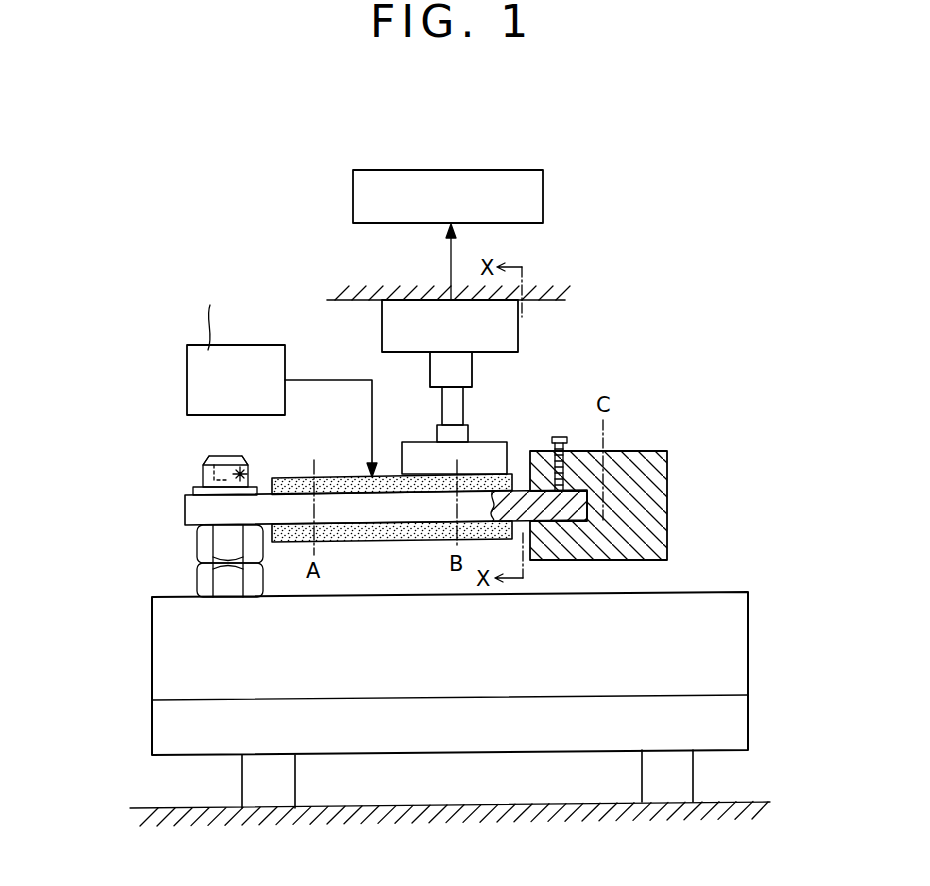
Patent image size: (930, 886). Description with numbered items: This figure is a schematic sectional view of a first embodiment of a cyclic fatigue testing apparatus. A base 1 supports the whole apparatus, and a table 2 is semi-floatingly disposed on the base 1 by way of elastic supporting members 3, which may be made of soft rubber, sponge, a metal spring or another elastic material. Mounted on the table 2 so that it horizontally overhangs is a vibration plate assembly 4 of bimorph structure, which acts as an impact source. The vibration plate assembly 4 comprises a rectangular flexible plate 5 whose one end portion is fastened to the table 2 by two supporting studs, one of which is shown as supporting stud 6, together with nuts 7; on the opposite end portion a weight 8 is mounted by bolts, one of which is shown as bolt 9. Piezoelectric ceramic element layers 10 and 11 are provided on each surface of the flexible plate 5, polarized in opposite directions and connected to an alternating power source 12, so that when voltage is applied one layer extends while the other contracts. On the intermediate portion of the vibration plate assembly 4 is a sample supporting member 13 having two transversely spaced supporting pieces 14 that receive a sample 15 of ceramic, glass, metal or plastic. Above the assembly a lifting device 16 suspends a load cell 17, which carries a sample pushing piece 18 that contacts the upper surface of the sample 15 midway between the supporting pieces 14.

The base 1 is at (720, 800).
The table 2 is at (177, 658).
The elastic supporting members 3 is at (265, 787).
The vibration plate assembly 4 is at (171, 506).
The flexible plate 5 is at (287, 507).
The supporting stud 6 is at (210, 455).
The nuts 7 is at (200, 583).
The weight 8 is at (653, 503).
The bolt 9 is at (560, 433).
The piezoelectric ceramic element layer 10 is at (345, 483).
The piezoelectric ceramic element layer 11 is at (390, 545).
The alternating power source 12 is at (283, 366).
The sample supporting member 13 is at (483, 453).
The supporting pieces 14 is at (452, 433).
The sample 15 is at (450, 410).
The lifting device 16 is at (528, 198).
The load cell 17 is at (503, 330).
The sample pushing piece 18 is at (472, 365).